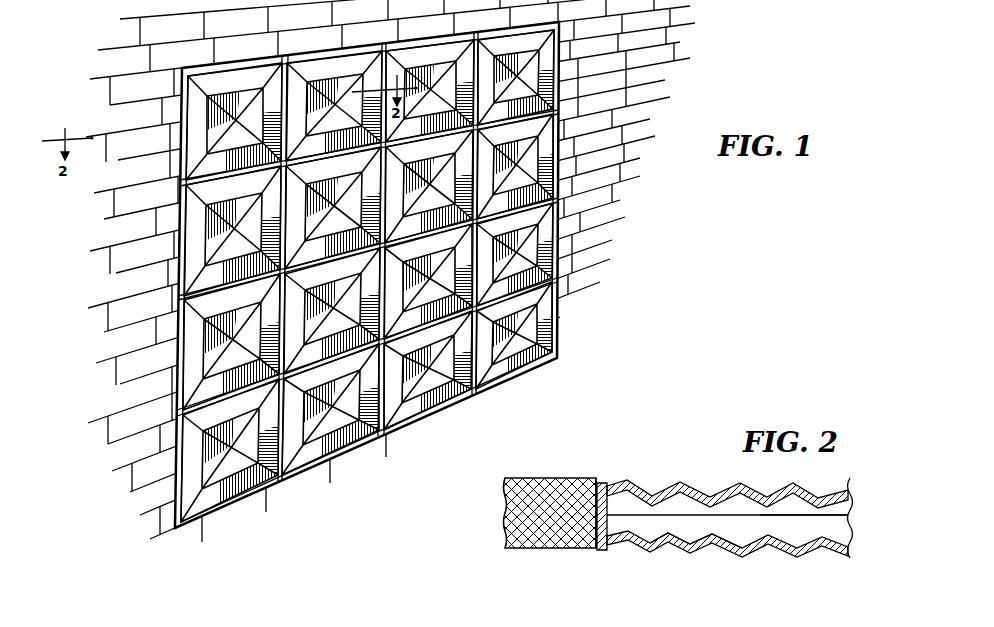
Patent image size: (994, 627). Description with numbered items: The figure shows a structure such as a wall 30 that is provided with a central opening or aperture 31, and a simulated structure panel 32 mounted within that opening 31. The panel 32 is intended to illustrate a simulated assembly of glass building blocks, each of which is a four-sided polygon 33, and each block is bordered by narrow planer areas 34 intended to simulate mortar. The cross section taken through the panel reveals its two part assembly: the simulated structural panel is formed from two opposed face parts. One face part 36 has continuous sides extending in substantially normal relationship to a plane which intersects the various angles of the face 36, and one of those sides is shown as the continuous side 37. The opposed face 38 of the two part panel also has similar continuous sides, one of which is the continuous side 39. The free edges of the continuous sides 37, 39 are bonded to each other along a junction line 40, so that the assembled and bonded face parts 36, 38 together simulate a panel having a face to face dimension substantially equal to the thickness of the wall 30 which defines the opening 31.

In FIG. 1, the wall 30 is at (600, 8).
In FIG. 2, the wall 30 is at (550, 535).
In FIG. 1, the central opening 31 is at (548, 40).
In FIG. 2, the central opening 31 is at (709, 504).
In FIG. 1, the simulated structure panel 32 is at (549, 82).
In FIG. 1, the four-sided polygon 33 is at (560, 167).
In FIG. 2, the four-sided polygon 33 is at (833, 553).
In FIG. 1, the narrow planer areas 34 is at (543, 277).
In FIG. 2, the narrow planer areas 34 is at (598, 546).
In FIG. 2, the face part 36 is at (690, 483).
In FIG. 2, the continuous side 37 is at (628, 492).
In FIG. 2, the opposed face 38 is at (693, 542).
In FIG. 2, the continuous side 39 is at (615, 527).
In FIG. 2, the junction line 40 is at (790, 520).